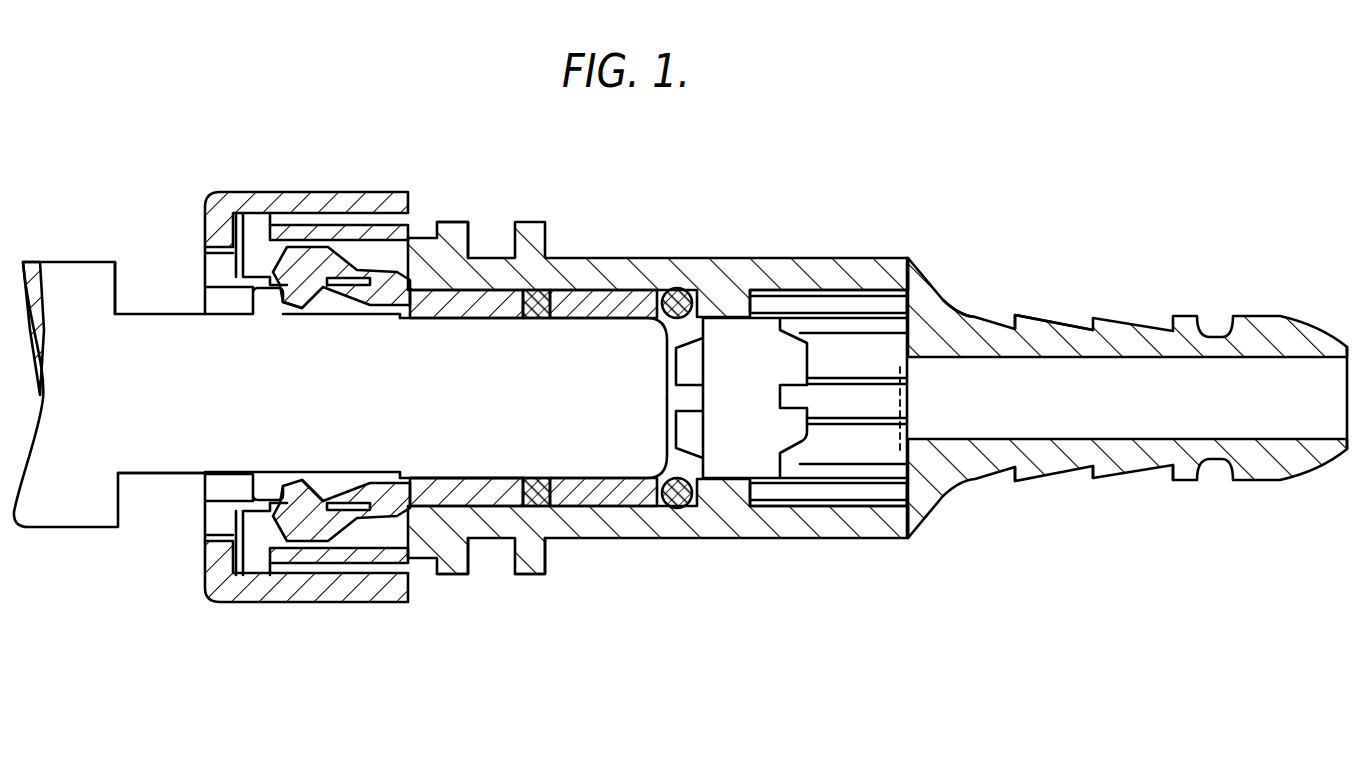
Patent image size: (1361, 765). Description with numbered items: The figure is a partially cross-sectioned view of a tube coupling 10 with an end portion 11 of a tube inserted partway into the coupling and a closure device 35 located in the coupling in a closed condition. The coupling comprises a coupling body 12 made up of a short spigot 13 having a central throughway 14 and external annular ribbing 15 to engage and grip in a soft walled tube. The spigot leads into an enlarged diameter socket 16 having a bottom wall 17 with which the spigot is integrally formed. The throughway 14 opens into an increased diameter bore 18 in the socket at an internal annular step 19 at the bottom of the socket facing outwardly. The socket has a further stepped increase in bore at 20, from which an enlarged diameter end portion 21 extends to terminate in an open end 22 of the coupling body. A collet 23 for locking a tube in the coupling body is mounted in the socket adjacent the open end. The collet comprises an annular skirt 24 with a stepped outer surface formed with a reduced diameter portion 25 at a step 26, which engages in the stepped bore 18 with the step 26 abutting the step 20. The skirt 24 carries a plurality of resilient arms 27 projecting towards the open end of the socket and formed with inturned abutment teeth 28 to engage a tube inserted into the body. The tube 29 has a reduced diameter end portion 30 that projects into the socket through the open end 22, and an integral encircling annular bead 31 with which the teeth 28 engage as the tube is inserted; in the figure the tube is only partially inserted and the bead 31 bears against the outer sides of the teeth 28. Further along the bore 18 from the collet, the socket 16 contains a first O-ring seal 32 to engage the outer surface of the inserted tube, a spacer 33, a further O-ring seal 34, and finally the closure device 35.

The tube coupling 10 is at (955, 134).
The end portion of a tube 11 is at (593, 432).
The coupling body 12 is at (908, 264).
The spigot 13 is at (1112, 328).
The central throughway 14 is at (1292, 360).
The external annular ribbing 15 is at (1198, 506).
The socket 16 is at (740, 266).
The bottom wall 17 is at (928, 285).
The bore 18 is at (827, 290).
The internal annular step 19 is at (913, 335).
The stepped increase in bore 20 is at (458, 238).
The retaining ring 21 is at (292, 250).
The open end 22 is at (272, 240).
The collet 23 is at (376, 532).
The annular skirt 24 is at (420, 507).
The reduced diameter portion 25 is at (473, 500).
The step 26 is at (418, 300).
The resilient arms 27 is at (352, 292).
The inturned abutment teeth 28 is at (296, 306).
The tube 29 is at (66, 280).
The reduced diameter end portion 30 is at (143, 313).
The annular bead 31 is at (263, 490).
The first O-ring seal 32 is at (540, 292).
The spacer 33 is at (606, 290).
The further O-ring seal 34 is at (673, 289).
The closure device 35 is at (790, 413).